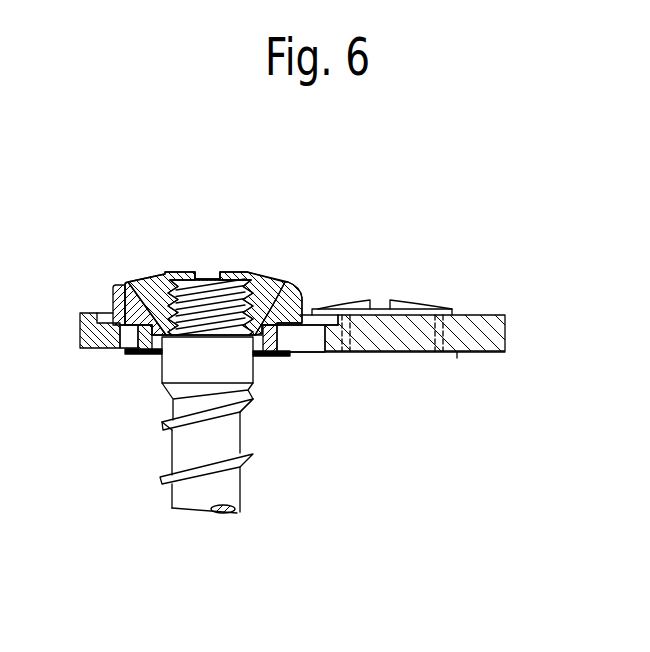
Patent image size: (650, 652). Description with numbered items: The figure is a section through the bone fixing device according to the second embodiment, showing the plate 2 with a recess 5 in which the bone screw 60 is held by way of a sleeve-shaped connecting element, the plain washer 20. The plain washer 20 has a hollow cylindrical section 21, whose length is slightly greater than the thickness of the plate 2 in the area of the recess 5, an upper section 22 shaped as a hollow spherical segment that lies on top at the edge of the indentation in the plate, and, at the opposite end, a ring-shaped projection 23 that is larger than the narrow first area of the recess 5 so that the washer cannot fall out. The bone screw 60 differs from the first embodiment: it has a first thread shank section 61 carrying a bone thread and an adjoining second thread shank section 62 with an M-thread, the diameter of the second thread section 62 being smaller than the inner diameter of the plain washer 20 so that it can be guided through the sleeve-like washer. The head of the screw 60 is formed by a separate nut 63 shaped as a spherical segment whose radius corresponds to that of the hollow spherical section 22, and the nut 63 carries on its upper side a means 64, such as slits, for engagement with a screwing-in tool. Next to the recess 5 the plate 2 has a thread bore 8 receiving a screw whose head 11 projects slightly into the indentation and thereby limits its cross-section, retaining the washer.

The plate 2 is at (505, 333).
The recess 5 is at (308, 337).
The thread bore 8 is at (457, 358).
The head 11 is at (412, 300).
The plain washer 20 is at (88, 305).
The hollow cylindrical section 21 is at (114, 328).
The section shaped as a hollow spherical segment 22 is at (113, 295).
The ring-shaped projection 23 is at (282, 358).
The bone screw 60 is at (216, 428).
The first thread shank section 61 is at (243, 456).
The second thread shank section 62 is at (230, 303).
The nut 63 is at (273, 298).
The means for bringing into engagement with a screwing-in tool 64 is at (206, 278).